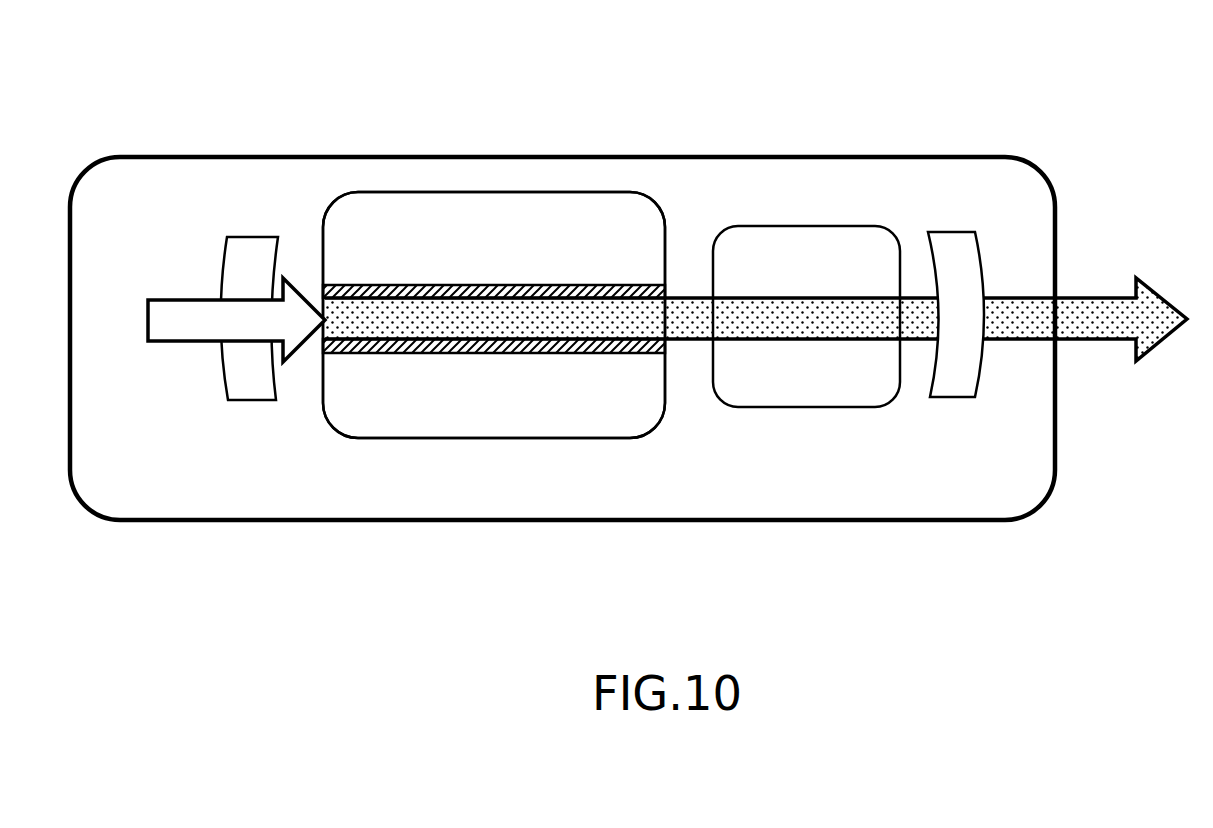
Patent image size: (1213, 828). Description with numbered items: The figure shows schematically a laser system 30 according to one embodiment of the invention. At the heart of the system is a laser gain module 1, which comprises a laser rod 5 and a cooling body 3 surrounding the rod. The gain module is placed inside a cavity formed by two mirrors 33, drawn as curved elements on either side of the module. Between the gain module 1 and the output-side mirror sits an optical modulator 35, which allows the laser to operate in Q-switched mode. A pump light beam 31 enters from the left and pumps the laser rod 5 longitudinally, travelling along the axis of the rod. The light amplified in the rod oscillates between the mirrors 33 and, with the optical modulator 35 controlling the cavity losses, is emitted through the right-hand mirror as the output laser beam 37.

The laser system 30 is at (578, 47).
The laser gain module 1 is at (525, 443).
The cooling body 3 is at (590, 207).
The laser rod 5 is at (425, 283).
The light beam 31 is at (193, 328).
The mirrors 33 is at (250, 400).
The optical modulator 35 is at (832, 226).
The laser beam 37 is at (1153, 330).